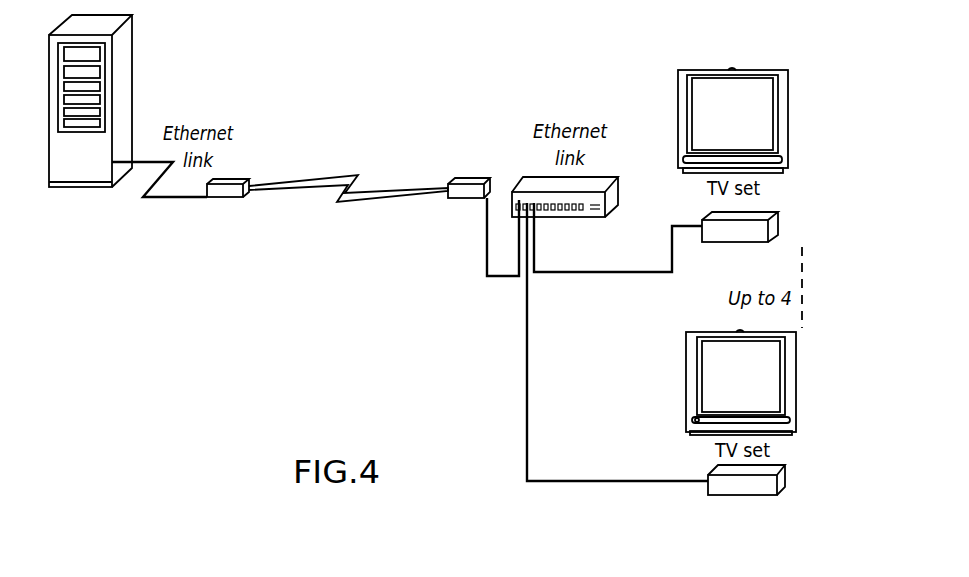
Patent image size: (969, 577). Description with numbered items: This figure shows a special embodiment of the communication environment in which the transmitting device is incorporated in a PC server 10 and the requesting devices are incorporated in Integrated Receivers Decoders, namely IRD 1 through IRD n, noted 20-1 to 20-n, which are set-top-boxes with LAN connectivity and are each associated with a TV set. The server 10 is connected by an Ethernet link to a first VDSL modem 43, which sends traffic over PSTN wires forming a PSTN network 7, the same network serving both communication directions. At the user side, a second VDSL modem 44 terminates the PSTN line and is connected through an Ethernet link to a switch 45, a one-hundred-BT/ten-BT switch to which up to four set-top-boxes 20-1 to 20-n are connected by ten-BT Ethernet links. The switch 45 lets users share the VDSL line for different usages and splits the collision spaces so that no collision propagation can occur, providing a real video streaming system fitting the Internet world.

The server 10 is at (94, 245).
The first VDSL modem 43 is at (235, 298).
The second VDSL modem 44 is at (454, 298).
The PSTN network 7 is at (391, 130).
The switch 45 is at (645, 262).
The IRD 1 20-1 is at (702, 222).
The IRD n 20-n is at (712, 468).